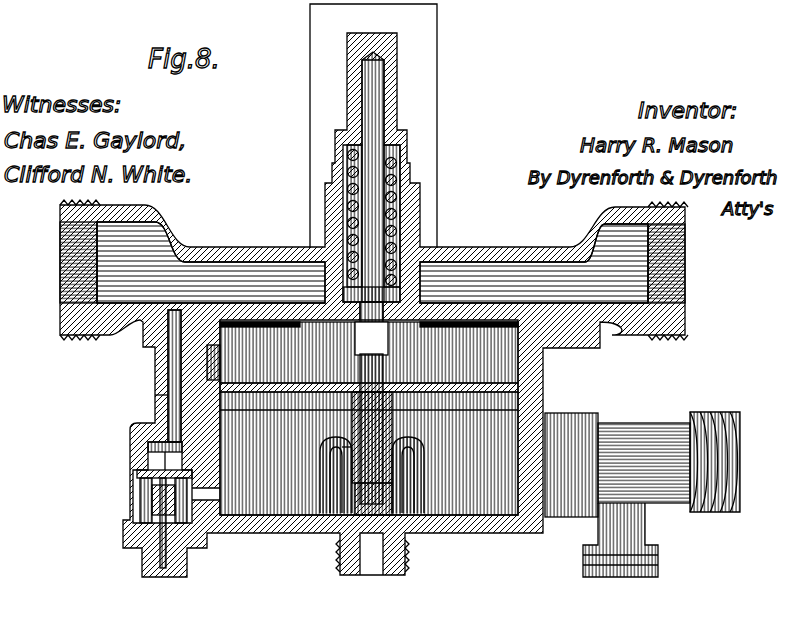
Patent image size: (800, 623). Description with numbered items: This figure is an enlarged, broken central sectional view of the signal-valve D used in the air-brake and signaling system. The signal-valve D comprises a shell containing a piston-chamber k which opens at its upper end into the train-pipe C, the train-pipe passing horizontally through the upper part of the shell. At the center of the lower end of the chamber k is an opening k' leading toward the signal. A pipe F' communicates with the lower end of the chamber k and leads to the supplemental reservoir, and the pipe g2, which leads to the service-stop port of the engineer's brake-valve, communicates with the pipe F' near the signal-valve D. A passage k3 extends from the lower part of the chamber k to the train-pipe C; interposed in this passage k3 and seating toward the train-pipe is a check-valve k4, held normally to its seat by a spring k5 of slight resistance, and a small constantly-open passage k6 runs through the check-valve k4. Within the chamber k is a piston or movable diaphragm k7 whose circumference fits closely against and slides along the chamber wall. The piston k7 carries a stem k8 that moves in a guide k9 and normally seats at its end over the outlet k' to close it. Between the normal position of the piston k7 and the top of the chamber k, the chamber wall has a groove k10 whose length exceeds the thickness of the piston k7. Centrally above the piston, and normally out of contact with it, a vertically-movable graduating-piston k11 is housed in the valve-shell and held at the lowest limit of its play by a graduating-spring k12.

The signal-valve D is at (374, 290).
The train-pipe C is at (62, 268).
The pipe F' is at (642, 450).
The pipe g2 is at (640, 525).
The piston-chamber k is at (362, 418).
The opening k' is at (397, 498).
The passage k3 is at (296, 494).
The check-valve k4 is at (150, 473).
The spring k5 is at (136, 498).
The constantly-open passage k6 is at (232, 468).
The piston k7 is at (366, 376).
The stem k8 is at (360, 423).
The guide k9 is at (372, 463).
The groove k10 is at (175, 353).
The graduating-piston k11 is at (366, 342).
The graduating-spring k12 is at (348, 170).